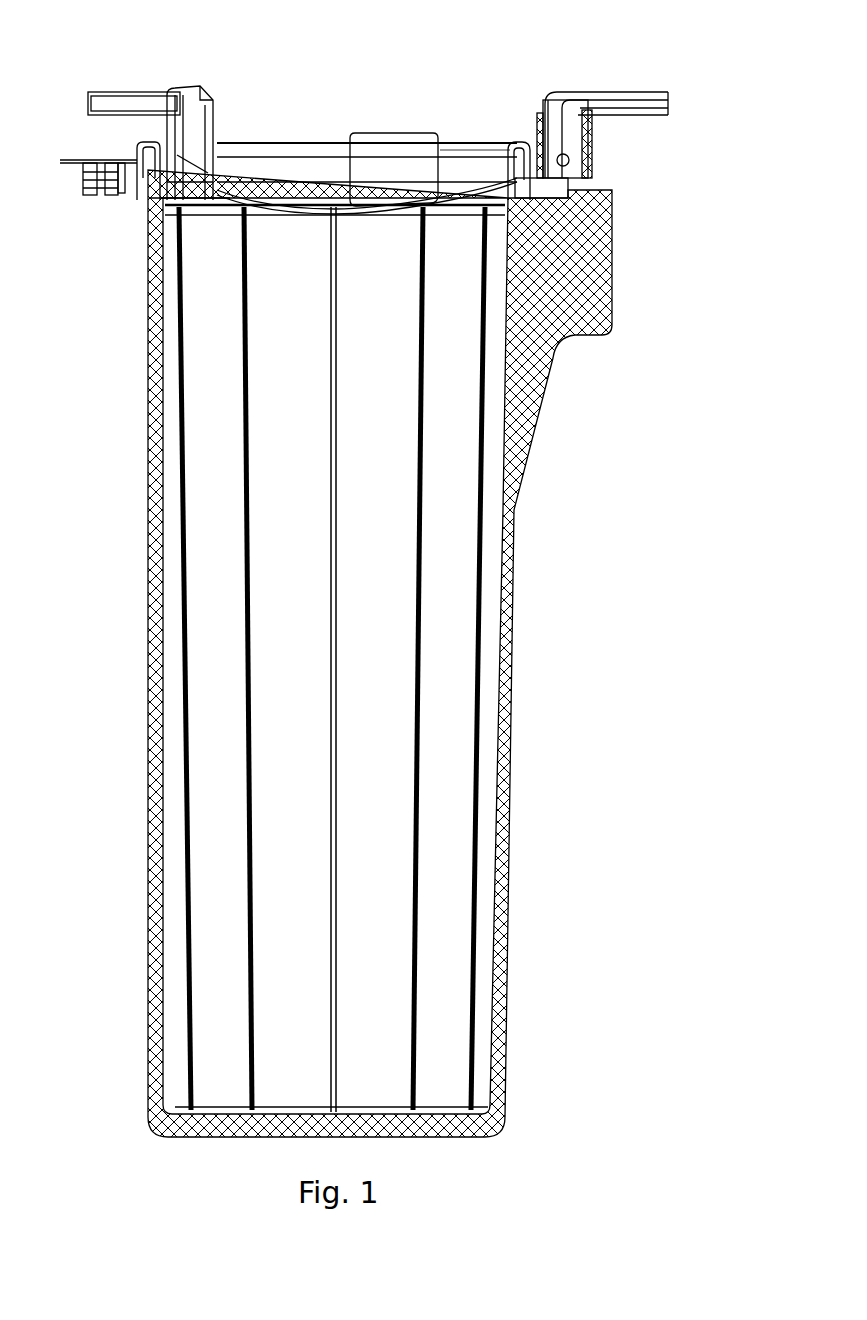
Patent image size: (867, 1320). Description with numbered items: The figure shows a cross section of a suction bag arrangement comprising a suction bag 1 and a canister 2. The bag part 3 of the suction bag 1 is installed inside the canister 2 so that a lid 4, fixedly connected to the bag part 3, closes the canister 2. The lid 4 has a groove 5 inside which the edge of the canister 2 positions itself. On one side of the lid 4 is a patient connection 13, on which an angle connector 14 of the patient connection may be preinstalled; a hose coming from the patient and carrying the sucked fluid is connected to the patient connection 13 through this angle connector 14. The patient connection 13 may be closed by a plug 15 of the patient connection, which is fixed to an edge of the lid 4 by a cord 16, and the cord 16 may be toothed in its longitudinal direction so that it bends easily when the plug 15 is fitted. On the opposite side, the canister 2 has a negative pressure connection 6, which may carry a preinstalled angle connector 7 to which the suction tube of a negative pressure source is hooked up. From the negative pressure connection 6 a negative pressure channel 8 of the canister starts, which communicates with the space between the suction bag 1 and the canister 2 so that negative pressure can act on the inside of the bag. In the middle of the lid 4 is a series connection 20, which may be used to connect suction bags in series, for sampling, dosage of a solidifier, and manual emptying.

The suction bag 1 is at (268, 142).
The canister 2 is at (578, 278).
The bag part 3 is at (458, 538).
The lid 4 is at (468, 140).
The groove 5 is at (519, 150).
The negative pressure connection 6 is at (590, 148).
The angle connector of the negative pressure connection 7 is at (612, 94).
The negative pressure channel 8 is at (547, 190).
The patient connection 13 is at (215, 122).
The angle connector of the patient connection 14 is at (122, 87).
The plug of the patient connection 15 is at (90, 197).
The cord 16 is at (130, 165).
The series connection 20 is at (380, 152).